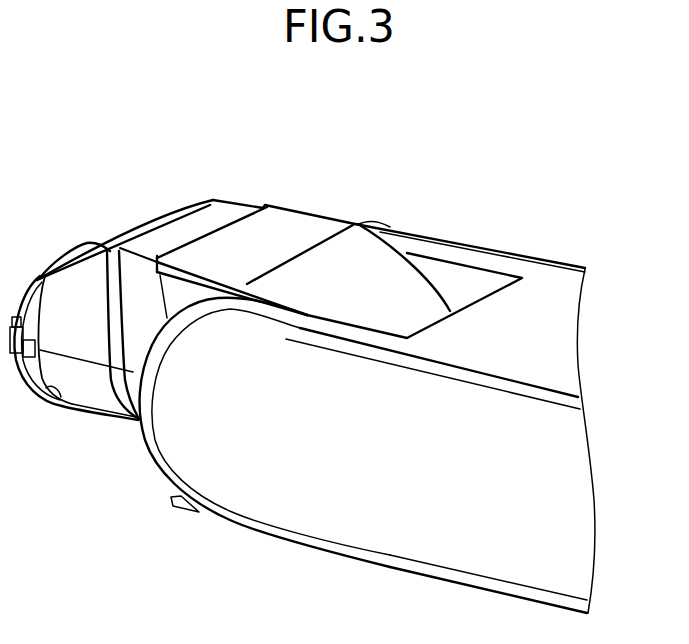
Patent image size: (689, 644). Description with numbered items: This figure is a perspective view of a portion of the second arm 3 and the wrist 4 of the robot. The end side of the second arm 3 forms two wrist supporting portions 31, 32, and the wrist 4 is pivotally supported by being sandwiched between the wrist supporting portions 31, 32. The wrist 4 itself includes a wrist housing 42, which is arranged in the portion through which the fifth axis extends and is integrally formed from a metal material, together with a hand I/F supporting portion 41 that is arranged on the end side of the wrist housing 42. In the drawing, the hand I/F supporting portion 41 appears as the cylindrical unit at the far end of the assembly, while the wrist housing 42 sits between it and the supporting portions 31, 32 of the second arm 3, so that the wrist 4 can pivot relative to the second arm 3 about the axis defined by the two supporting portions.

The second arm 3 is at (566, 312).
The wrist supporting portion 31 is at (257, 307).
The wrist supporting portion 32 is at (503, 260).
The wrist 4 is at (228, 220).
The hand I/F supporting portion 41 is at (72, 278).
The wrist housing 42 is at (287, 227).